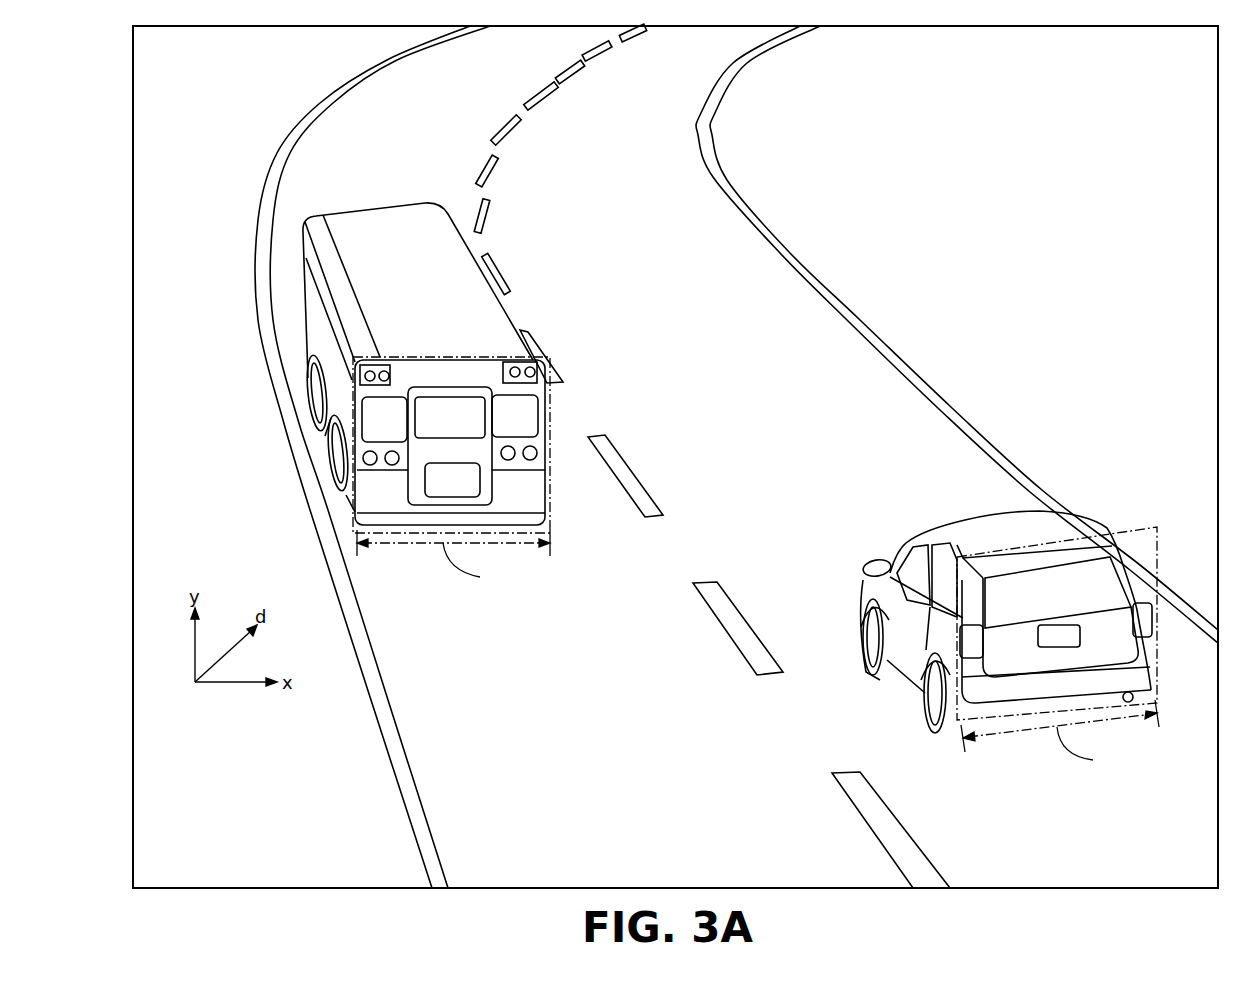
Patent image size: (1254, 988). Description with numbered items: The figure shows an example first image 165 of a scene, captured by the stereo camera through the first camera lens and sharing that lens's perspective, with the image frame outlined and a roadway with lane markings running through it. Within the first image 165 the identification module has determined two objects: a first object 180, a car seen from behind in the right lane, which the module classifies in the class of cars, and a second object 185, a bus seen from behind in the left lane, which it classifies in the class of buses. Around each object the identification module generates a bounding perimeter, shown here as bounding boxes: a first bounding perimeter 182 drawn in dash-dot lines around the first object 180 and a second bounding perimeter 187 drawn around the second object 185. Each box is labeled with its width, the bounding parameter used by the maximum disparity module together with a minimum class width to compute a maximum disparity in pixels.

The first image 165 is at (133, 292).
The second object 185 is at (464, 427).
The second bounding perimeter 187 is at (547, 473).
The first object 180 is at (1073, 607).
The first bounding perimeter 182 is at (1158, 553).